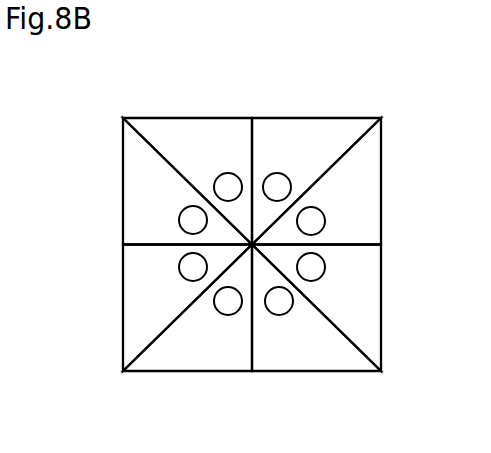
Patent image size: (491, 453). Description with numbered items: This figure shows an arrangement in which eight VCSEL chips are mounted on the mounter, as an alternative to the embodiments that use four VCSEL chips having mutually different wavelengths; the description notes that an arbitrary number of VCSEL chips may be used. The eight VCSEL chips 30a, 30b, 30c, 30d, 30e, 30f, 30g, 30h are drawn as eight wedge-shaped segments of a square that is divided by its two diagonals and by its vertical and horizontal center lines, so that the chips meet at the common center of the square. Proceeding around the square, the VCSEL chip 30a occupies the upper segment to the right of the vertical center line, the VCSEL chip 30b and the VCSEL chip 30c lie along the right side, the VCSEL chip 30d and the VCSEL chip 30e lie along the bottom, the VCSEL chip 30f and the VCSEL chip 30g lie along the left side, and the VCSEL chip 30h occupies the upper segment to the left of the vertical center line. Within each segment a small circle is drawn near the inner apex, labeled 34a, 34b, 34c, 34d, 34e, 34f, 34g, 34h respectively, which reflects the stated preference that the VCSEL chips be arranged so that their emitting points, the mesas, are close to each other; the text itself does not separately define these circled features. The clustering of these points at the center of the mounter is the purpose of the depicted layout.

The VCSEL chip 30a is at (328, 128).
The VCSEL chip 30b is at (358, 197).
The VCSEL chip 30c is at (366, 306).
The VCSEL chip 30d is at (328, 352).
The VCSEL chip 30e is at (163, 348).
The VCSEL chip 30f is at (146, 304).
The VCSEL chip 30g is at (146, 183).
The VCSEL chip 30h is at (167, 128).
The opening 34a is at (277, 182).
The opening 34b is at (318, 225).
The opening 34c is at (320, 268).
The opening 34d is at (282, 305).
The opening 34e is at (228, 305).
The opening 34f is at (187, 266).
The opening 34g is at (185, 220).
The opening 34h is at (227, 183).